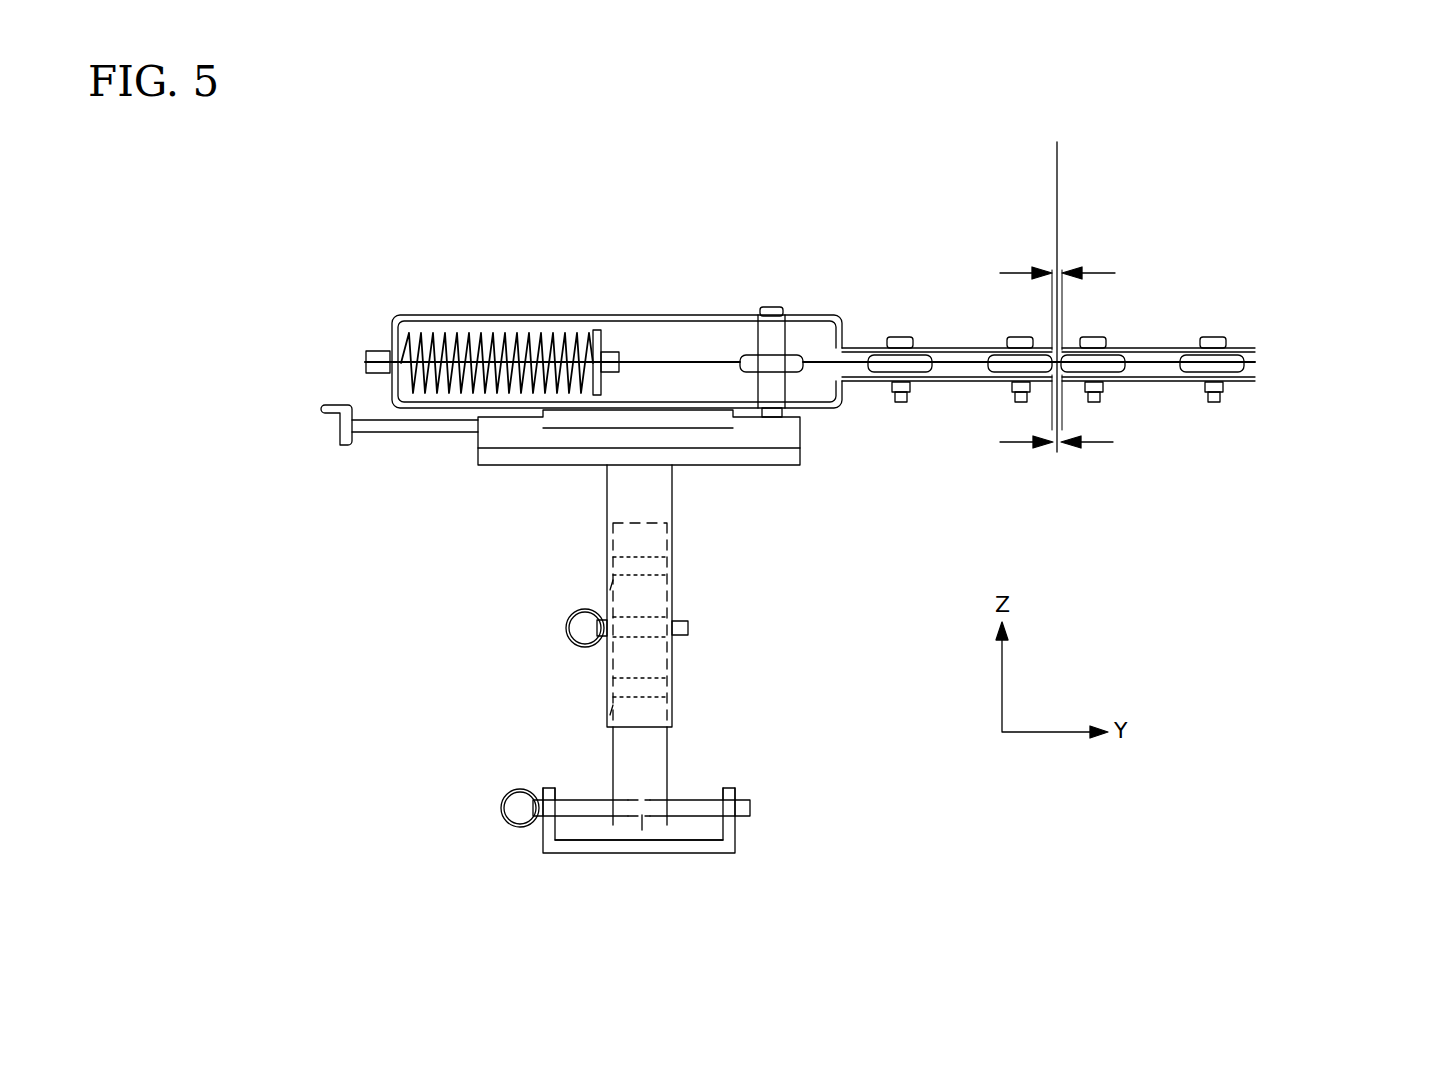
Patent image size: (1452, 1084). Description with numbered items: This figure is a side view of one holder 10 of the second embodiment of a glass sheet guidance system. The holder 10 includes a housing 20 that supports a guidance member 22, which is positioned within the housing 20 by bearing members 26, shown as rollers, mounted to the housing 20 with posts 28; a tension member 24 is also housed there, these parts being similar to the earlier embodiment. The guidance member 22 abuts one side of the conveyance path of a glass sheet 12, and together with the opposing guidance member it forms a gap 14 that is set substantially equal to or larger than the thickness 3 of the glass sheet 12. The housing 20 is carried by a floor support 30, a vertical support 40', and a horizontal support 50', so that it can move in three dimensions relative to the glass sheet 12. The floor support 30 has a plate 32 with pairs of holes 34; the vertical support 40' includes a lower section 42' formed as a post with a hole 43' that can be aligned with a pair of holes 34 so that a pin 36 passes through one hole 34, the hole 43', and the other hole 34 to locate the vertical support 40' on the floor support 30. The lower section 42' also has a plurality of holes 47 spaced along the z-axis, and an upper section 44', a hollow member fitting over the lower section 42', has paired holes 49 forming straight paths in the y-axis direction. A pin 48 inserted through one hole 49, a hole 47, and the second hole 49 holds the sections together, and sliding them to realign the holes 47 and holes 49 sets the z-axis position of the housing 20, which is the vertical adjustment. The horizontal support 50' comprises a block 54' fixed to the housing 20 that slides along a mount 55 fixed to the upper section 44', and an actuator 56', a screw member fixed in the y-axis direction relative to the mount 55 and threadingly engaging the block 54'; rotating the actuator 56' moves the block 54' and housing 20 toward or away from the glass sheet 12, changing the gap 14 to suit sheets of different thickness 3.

The holder 10 is at (1242, 727).
The glass sheet 12 is at (1053, 168).
The gap 14 is at (1100, 272).
The thickness 3 is at (1098, 442).
The housing 20 is at (530, 320).
The guidance member 22 is at (700, 360).
The tension member 24 is at (425, 335).
The bearing members 26 is at (795, 355).
The posts 28 is at (770, 307).
The floor support 30 is at (735, 845).
The plate 32 is at (568, 855).
The holes 34 is at (545, 790).
The pin 36 is at (565, 810).
The vertical support 40' is at (756, 656).
The lower section 42' is at (702, 674).
The hole 43' is at (676, 876).
The upper section 44' is at (699, 596).
The holes 47 is at (606, 655).
The pin 48 is at (690, 628).
The holes 49 is at (607, 560).
The horizontal support 50' is at (385, 490).
The block 54' is at (716, 445).
The mount 55 is at (508, 435).
The actuator 56' is at (276, 425).